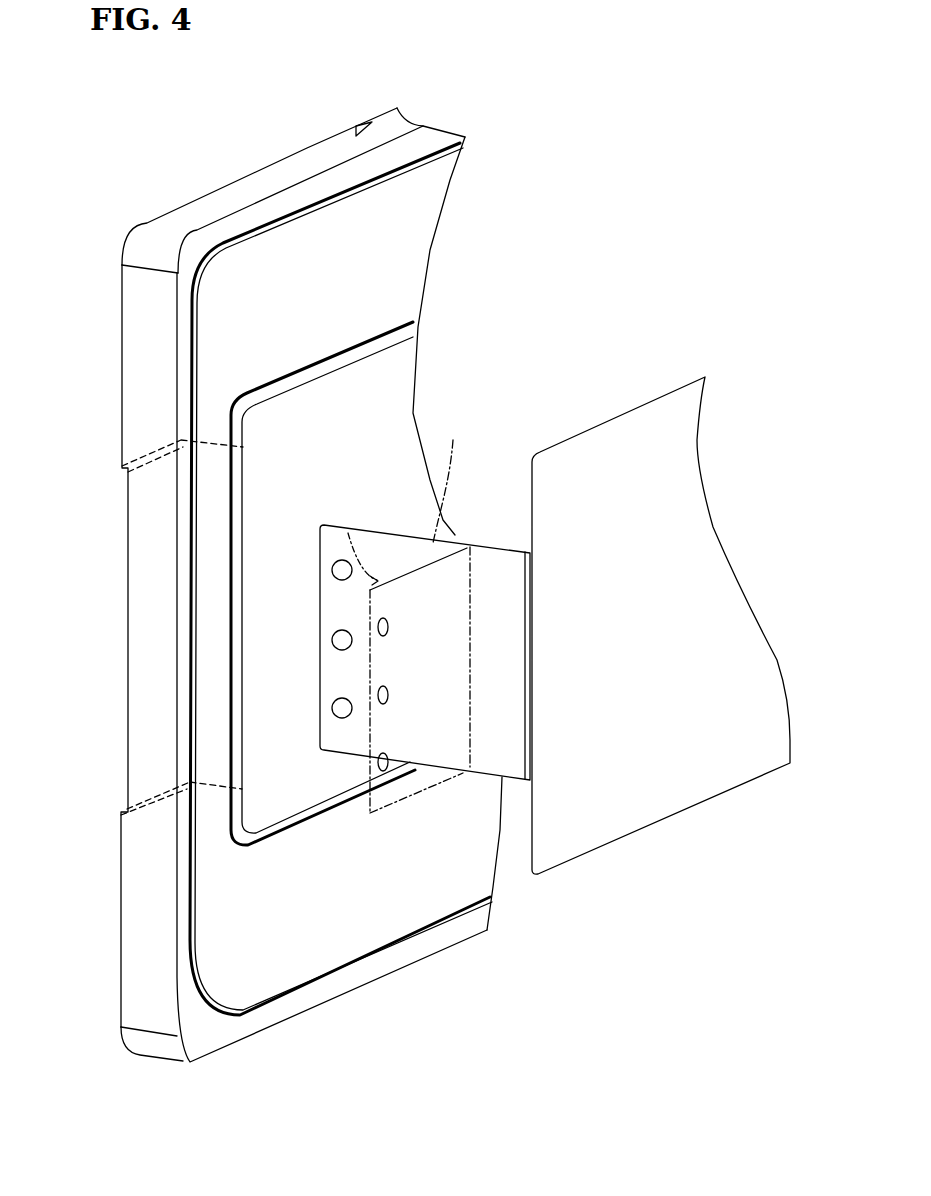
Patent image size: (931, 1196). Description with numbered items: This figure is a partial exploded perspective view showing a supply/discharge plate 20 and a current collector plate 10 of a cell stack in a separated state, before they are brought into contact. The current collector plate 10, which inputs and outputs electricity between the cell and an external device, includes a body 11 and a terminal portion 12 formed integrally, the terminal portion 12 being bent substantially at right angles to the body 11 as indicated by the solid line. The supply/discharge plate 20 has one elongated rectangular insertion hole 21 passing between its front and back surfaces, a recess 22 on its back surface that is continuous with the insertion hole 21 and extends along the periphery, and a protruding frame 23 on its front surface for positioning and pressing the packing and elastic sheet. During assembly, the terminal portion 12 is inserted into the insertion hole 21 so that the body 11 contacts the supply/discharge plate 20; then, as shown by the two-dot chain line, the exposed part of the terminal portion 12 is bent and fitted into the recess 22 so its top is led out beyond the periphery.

The current collector plate 10 is at (566, 653).
The body 11 is at (637, 425).
The terminal portion 12 is at (390, 540).
The supply/discharge plate 20 is at (247, 187).
The insertion hole 21 is at (260, 463).
The recess 22 is at (128, 503).
The protruding frame 23 is at (415, 328).